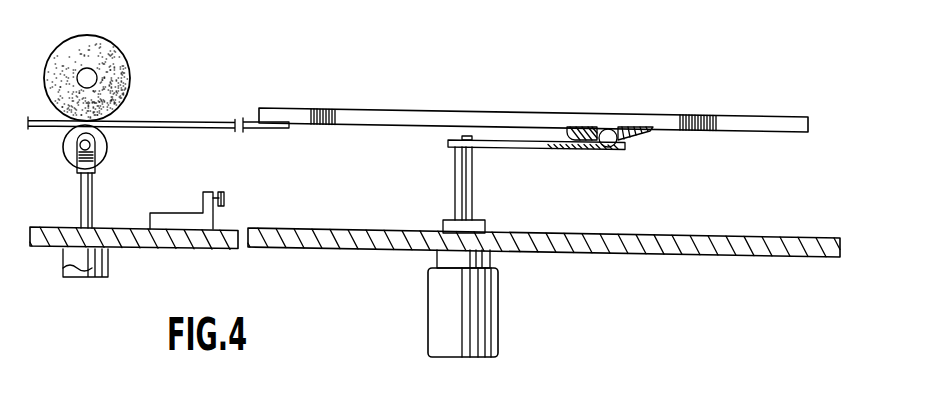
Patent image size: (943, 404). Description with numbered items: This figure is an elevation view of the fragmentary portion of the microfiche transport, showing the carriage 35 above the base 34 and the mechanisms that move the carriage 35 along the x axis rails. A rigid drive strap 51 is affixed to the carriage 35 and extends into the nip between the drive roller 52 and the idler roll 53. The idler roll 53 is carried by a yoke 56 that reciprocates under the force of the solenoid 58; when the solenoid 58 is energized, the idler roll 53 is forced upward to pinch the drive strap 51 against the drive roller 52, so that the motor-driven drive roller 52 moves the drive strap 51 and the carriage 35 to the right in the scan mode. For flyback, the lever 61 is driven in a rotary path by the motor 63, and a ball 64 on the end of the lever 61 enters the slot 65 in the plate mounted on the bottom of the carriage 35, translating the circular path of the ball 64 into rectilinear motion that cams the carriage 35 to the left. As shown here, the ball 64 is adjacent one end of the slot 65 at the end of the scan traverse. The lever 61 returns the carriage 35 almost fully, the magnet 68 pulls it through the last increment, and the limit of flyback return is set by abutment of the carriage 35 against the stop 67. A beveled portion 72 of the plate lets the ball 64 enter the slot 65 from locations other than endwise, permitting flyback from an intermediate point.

The base 34 is at (614, 253).
The carriage 35 is at (596, 112).
The drive strap 51 is at (188, 106).
The drive roller 52 is at (119, 63).
The idler roll 53 is at (106, 144).
The yoke 56 is at (96, 166).
The solenoid 58 is at (108, 272).
The lever 61 is at (526, 148).
The motor 63 is at (568, 126).
The ball 64 is at (608, 148).
The slot 65 is at (619, 127).
The stop 67 is at (225, 200).
The magnet 68 is at (169, 222).
The beveled portion of plate 72 is at (640, 136).